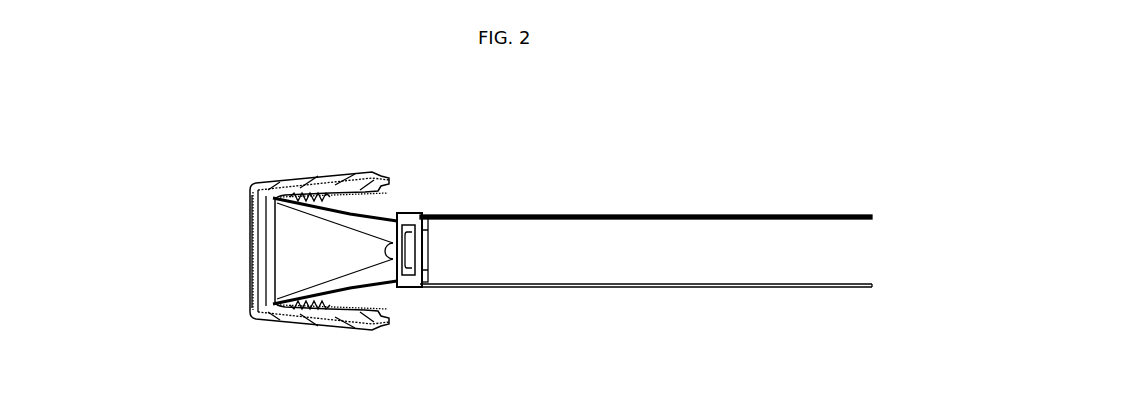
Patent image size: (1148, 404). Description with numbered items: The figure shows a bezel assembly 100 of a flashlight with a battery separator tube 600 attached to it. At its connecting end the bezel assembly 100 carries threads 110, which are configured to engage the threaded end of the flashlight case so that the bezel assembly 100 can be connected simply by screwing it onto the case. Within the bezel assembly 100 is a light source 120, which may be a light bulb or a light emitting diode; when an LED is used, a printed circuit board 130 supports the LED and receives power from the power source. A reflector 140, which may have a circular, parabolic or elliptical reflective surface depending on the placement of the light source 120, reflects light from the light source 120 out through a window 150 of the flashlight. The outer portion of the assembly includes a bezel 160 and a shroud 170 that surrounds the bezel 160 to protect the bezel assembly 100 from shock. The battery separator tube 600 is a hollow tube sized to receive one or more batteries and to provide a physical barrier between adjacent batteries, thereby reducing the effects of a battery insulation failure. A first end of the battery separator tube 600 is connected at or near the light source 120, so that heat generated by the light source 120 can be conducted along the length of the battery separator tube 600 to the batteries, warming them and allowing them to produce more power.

The bezel assembly 100 is at (211, 217).
The threads 110 is at (345, 199).
The light source 120 is at (403, 290).
The printed circuit board 130 is at (405, 288).
The reflector 140 is at (317, 310).
The window 150 is at (262, 278).
The bezel 160 is at (277, 305).
The shroud 170 is at (343, 181).
The battery separator tube 600 is at (690, 215).